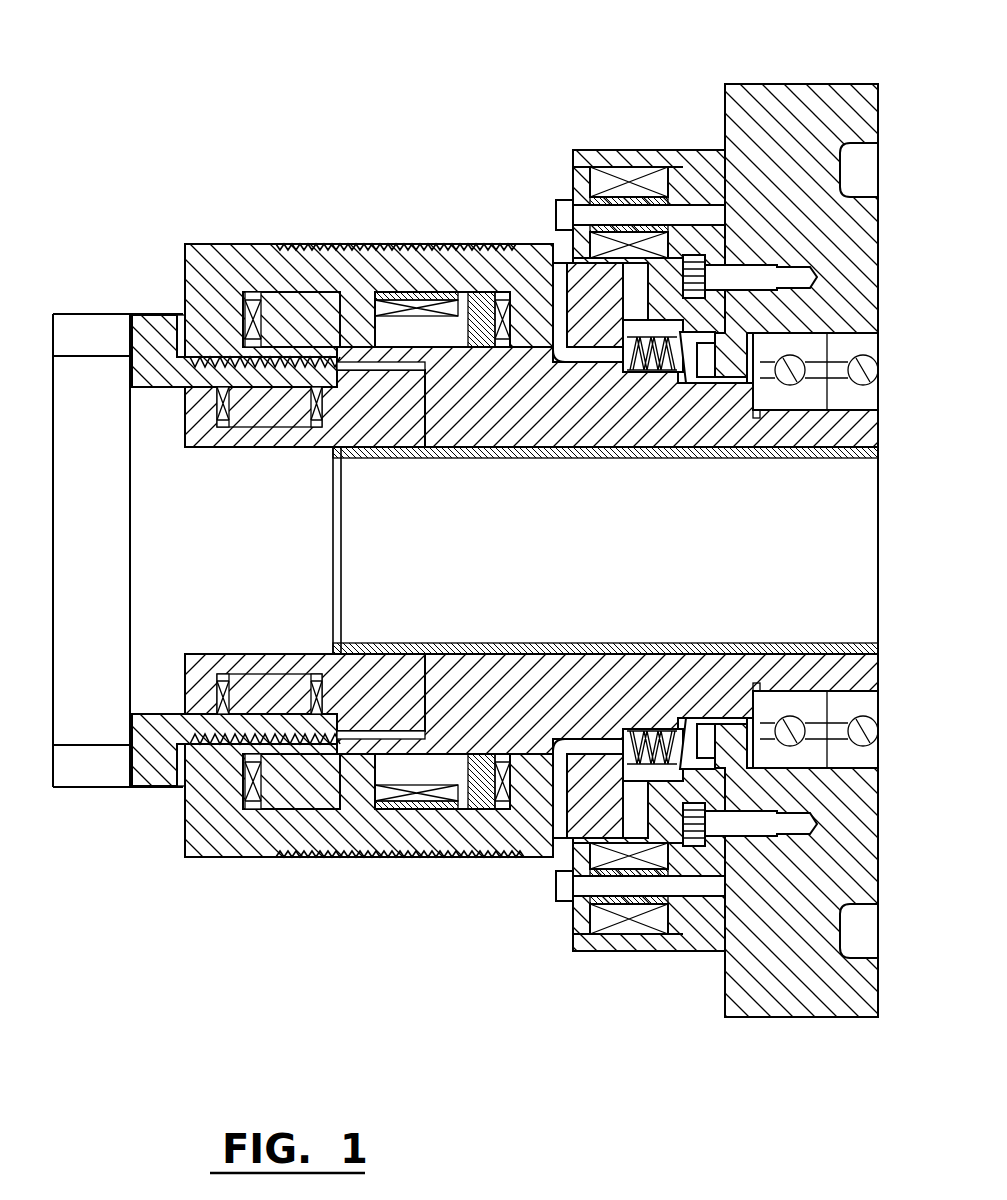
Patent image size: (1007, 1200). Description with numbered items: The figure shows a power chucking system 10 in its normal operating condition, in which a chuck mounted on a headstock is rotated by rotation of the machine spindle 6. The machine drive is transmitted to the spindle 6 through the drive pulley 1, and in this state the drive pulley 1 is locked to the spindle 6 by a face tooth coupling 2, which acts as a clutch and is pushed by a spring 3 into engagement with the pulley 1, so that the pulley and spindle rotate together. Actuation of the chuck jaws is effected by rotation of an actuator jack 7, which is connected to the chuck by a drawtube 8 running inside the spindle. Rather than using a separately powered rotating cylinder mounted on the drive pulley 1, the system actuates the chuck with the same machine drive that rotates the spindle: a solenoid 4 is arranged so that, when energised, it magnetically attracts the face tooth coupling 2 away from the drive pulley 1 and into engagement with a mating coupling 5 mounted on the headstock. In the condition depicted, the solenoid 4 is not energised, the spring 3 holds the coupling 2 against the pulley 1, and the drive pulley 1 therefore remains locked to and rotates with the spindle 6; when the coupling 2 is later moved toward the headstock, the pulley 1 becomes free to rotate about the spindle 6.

The drive pulley 1 is at (300, 243).
The face tooth coupling 2 is at (578, 300).
The spring 3 is at (633, 372).
The solenoid 4 is at (607, 187).
The mating coupling 5 is at (655, 250).
The machine spindle 6 is at (682, 422).
The actuator jack 7 is at (272, 410).
The drawtube 8 is at (458, 462).
The power chucking system 10 is at (394, 205).